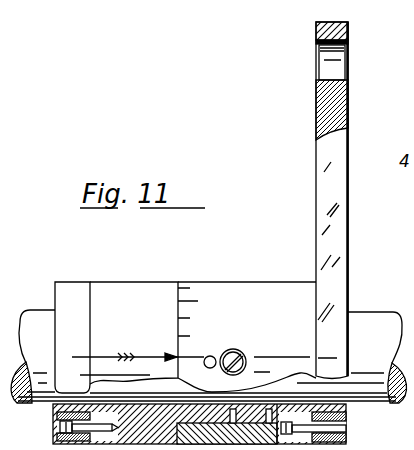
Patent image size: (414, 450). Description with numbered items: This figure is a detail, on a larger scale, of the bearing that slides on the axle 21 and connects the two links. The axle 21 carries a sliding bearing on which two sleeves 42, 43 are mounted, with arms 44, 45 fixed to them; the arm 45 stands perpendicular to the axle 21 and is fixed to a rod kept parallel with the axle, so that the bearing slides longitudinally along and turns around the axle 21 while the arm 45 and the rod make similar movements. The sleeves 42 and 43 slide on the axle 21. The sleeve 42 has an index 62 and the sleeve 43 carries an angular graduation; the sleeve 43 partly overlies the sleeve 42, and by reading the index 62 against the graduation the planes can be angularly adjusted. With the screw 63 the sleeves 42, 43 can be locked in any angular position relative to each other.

The axle 21 is at (357, 320).
The sleeve 42 is at (163, 295).
The sleeve 43 is at (265, 297).
The arm 44 is at (78, 295).
The arm 45 is at (339, 220).
The index 62 is at (145, 358).
The screw 63 is at (238, 350).